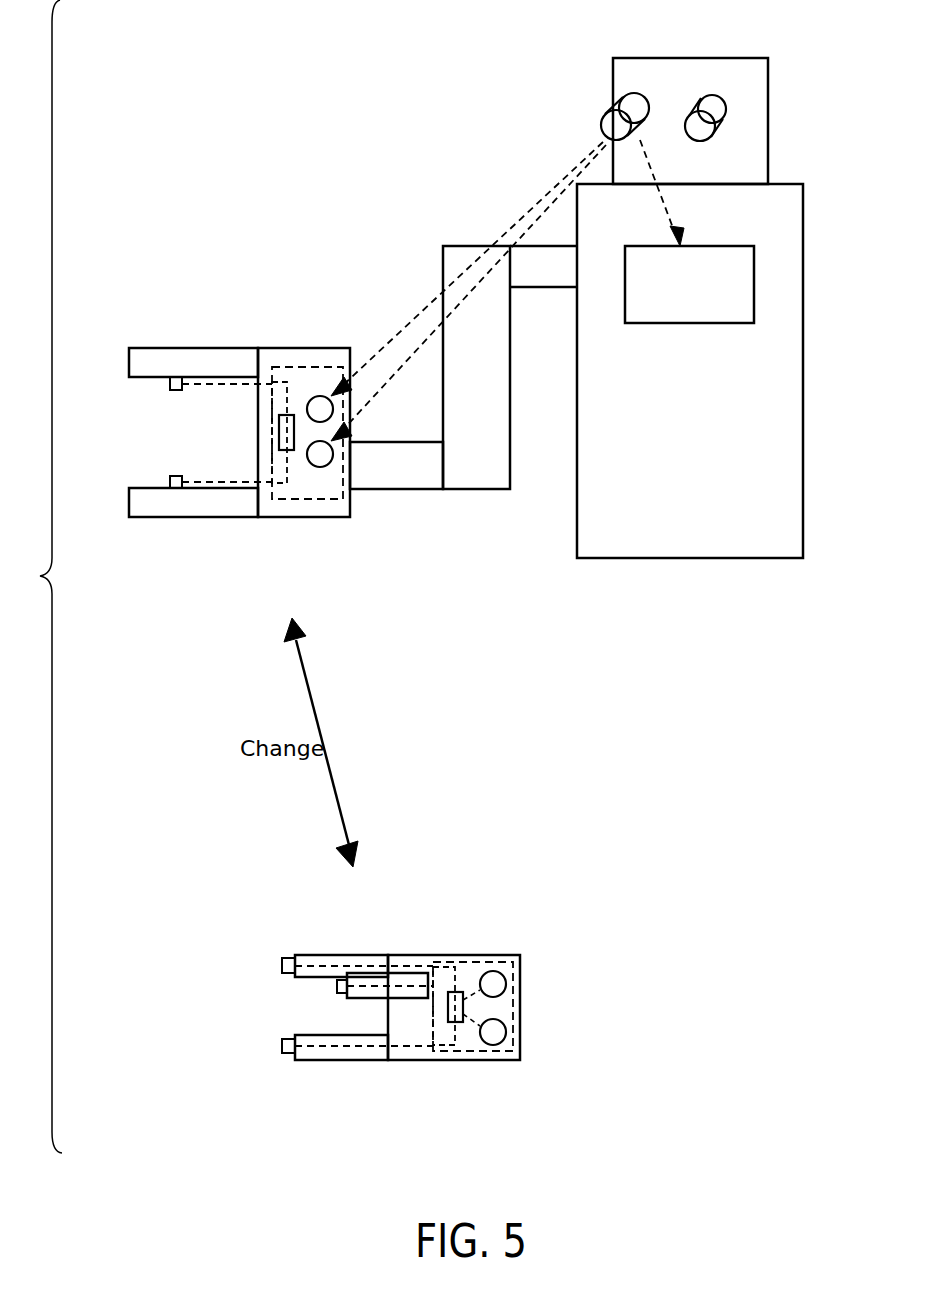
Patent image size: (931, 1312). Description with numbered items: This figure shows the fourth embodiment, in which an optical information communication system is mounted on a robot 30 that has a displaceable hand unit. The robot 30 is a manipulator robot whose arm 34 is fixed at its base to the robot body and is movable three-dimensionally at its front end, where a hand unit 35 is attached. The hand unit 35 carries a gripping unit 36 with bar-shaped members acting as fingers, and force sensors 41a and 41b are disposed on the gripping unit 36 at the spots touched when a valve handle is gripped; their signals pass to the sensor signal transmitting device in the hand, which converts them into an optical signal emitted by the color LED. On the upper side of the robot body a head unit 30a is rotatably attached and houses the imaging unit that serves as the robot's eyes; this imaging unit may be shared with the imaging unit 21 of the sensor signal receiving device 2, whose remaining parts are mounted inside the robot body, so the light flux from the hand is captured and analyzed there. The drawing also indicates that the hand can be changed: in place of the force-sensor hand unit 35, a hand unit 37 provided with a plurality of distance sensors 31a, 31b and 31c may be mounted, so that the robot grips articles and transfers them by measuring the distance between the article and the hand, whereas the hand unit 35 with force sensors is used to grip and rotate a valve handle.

The sensor signal receiving device 2 is at (754, 284).
The imaging unit 21 is at (632, 93).
The robot 30 is at (803, 470).
The head unit 30a is at (730, 58).
The distance sensor 31a is at (288, 1054).
The distance sensor 31b is at (288, 958).
The third finger 31c is at (342, 980).
The arm 34 is at (470, 490).
The hand unit 35 is at (290, 518).
The gripping unit 36 is at (226, 518).
The hand unit with distance sensors 37 is at (430, 1061).
The force sensor 41a is at (176, 489).
The force sensor 41b is at (176, 376).